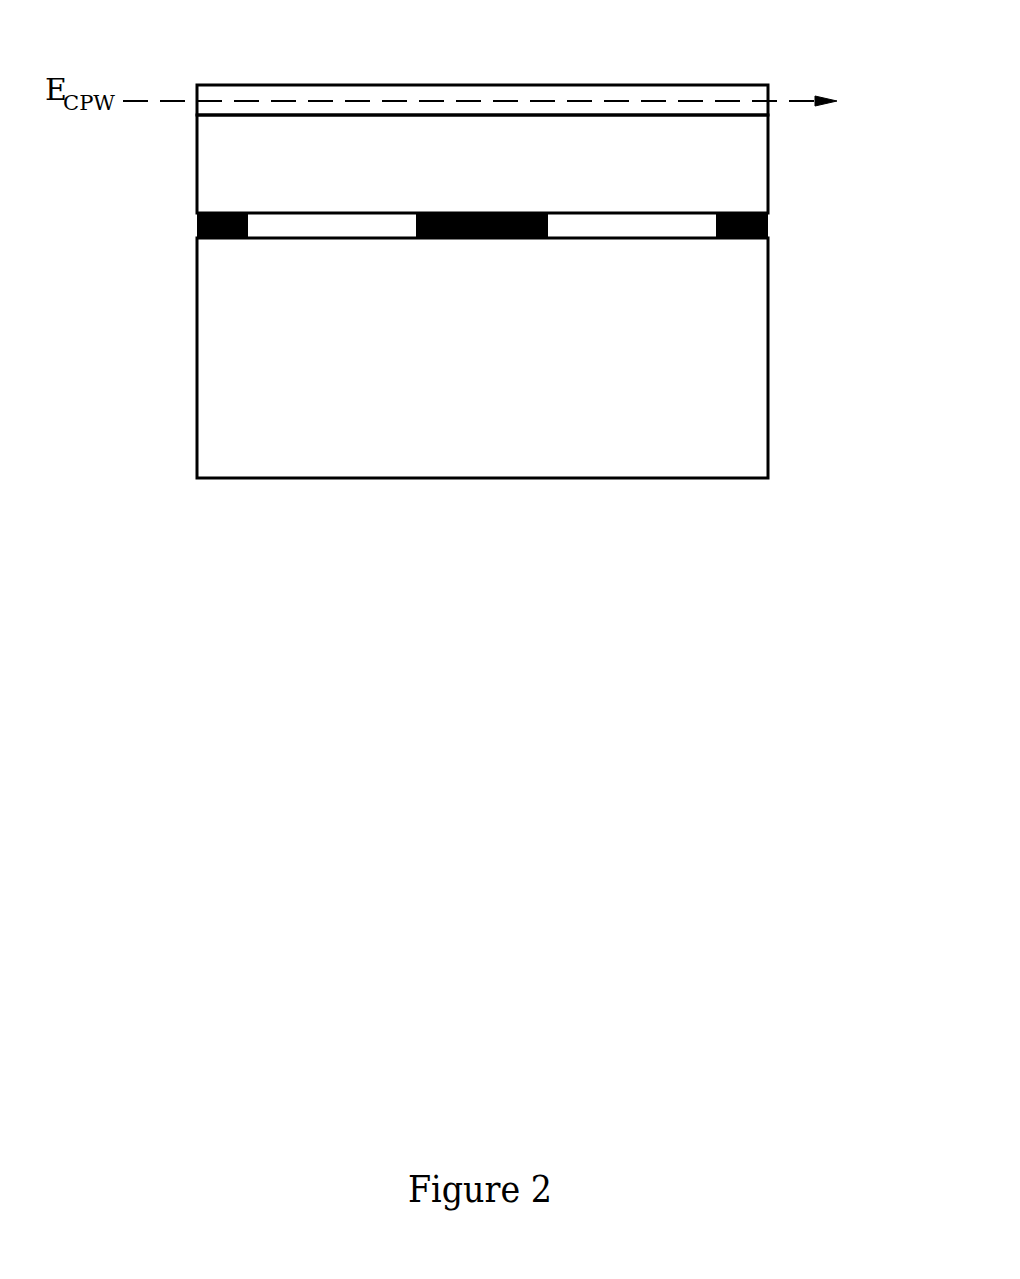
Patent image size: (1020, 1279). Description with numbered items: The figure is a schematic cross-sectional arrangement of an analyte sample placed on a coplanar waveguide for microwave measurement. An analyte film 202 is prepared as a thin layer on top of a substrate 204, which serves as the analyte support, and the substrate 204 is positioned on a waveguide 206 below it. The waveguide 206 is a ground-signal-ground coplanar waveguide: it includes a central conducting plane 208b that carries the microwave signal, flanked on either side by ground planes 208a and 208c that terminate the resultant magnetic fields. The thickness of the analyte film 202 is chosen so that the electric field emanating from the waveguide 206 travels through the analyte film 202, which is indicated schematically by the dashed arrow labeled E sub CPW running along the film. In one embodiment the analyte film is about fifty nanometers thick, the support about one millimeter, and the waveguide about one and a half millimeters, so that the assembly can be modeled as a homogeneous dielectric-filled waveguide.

The analyte film 202 is at (723, 85).
The substrate 204 is at (768, 150).
The waveguide 206 is at (768, 321).
The ground plane 208a is at (197, 222).
The conducting plane 208b is at (478, 213).
The ground plane 208c is at (768, 223).